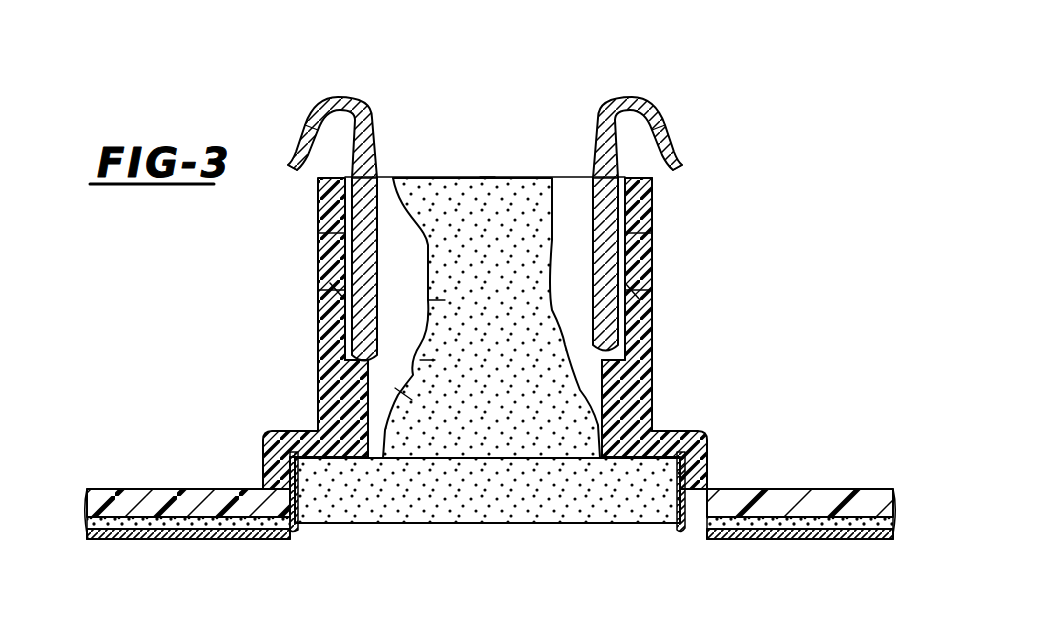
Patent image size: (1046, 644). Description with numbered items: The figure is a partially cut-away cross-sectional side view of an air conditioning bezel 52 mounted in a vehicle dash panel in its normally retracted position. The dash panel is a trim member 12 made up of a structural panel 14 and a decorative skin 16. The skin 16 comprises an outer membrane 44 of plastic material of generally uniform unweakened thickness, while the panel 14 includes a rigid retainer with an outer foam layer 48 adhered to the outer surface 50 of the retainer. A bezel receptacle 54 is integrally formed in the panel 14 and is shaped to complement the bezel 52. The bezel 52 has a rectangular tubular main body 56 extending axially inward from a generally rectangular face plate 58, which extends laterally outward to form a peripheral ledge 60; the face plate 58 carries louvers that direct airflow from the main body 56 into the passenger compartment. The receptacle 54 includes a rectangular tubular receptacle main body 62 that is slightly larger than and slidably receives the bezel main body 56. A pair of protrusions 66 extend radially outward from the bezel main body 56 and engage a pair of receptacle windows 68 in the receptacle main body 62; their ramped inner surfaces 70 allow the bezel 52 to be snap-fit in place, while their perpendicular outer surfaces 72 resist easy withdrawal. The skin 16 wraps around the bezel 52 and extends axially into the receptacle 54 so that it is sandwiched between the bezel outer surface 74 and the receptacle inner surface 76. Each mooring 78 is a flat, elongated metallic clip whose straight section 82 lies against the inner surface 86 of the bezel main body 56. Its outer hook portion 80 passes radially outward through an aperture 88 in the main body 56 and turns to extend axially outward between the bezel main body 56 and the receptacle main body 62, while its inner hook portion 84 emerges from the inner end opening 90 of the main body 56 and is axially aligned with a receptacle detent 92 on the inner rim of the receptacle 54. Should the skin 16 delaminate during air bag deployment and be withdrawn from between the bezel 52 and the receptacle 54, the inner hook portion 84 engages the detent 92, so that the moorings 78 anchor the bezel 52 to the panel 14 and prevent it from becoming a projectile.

The trim member 12 is at (473, 497).
The structural panel 14 is at (165, 482).
The decorative skin 16 is at (219, 542).
The outer membrane 44 is at (137, 541).
The outer foam layer 48 is at (203, 505).
The outer surface of the retainer 50 is at (88, 528).
The air conditioning bezel 52 is at (490, 174).
The bezel receptacle 54 is at (529, 333).
The tubular main body 56 is at (450, 188).
The face plate 58 is at (487, 524).
The peripheral ledge 60 is at (640, 524).
The receptacle main body 62 is at (656, 398).
The protrusion 66 is at (485, 237).
The receptacle window 68 is at (645, 238).
The ramped inner surface 70 is at (430, 268).
The perpendicular outer surface 72 is at (332, 304).
The bezel outer surface 74 is at (369, 133).
The receptacle inner surface 76 is at (668, 110).
The mooring 78 is at (306, 106).
The outer hook portion 80 is at (615, 360).
The straight section 82 is at (625, 308).
The inner hook portion 84 is at (384, 183).
The inner surface of the main body 86 is at (385, 402).
The aperture 88 is at (360, 362).
The inner end opening 90 is at (393, 183).
The receptacle detent 92 is at (305, 165).